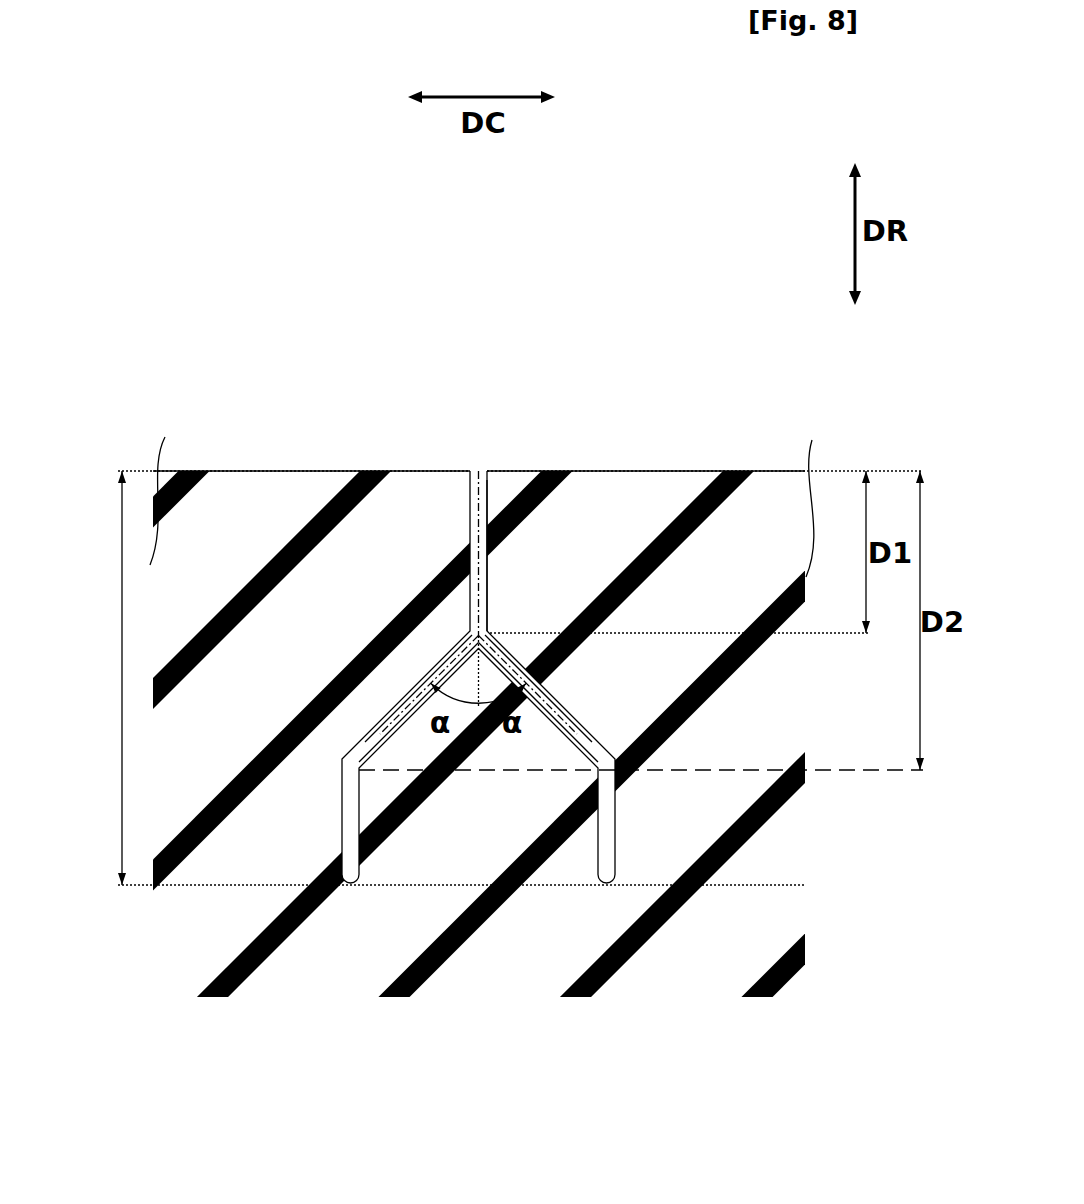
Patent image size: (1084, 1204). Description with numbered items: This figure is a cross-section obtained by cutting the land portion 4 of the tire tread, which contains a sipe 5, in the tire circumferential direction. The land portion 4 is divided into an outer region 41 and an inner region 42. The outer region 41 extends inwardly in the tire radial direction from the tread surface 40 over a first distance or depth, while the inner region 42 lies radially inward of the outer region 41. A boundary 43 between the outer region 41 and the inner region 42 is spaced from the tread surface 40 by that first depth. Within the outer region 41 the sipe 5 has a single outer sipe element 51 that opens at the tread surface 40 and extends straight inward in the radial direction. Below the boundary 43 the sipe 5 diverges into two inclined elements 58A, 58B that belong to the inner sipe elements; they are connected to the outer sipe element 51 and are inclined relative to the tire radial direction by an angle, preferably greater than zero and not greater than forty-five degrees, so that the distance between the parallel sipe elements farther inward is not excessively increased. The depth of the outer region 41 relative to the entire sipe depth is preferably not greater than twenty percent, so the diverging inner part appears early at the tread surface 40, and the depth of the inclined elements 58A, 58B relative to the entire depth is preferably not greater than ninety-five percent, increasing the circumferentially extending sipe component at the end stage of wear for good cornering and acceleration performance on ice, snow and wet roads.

The land portion 4 is at (747, 472).
The tread surface 40 is at (316, 470).
The outer region 41 is at (676, 520).
The inner region 42 is at (686, 737).
The boundary 43 is at (128, 642).
The sipe 5 is at (479, 487).
The outer sipe element 51 is at (489, 548).
The inclined element 58A is at (592, 747).
The inclined element 58B is at (365, 737).